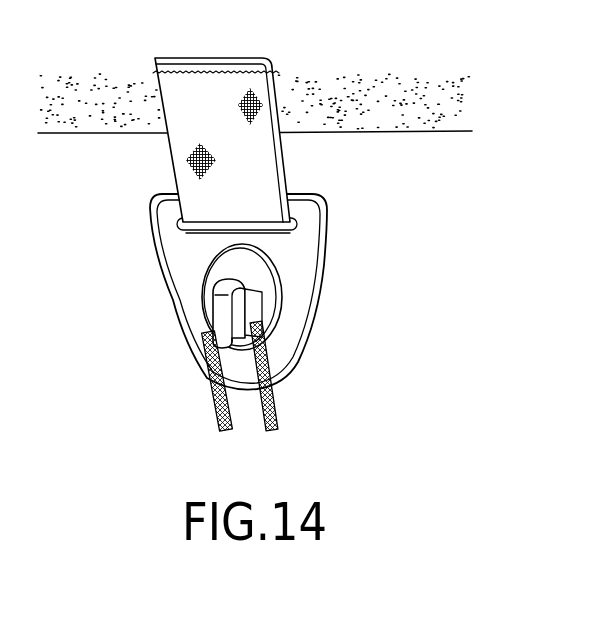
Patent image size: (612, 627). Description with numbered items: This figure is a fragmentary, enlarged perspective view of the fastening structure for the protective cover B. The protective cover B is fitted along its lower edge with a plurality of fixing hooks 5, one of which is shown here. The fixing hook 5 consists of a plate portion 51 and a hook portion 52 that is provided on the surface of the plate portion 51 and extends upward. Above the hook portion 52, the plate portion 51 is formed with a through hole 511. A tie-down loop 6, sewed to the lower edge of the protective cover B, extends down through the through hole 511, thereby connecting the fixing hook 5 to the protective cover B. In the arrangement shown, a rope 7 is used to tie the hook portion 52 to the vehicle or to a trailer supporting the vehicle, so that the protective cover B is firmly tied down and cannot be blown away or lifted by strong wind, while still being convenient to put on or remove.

The fixing hook 5 is at (259, 206).
The plate portion 51 is at (305, 278).
The through hole 511 is at (294, 221).
The hook portion 52 is at (212, 311).
The tie-down loop 6 is at (235, 87).
The rope 7 is at (275, 407).
The protective cover B is at (437, 132).